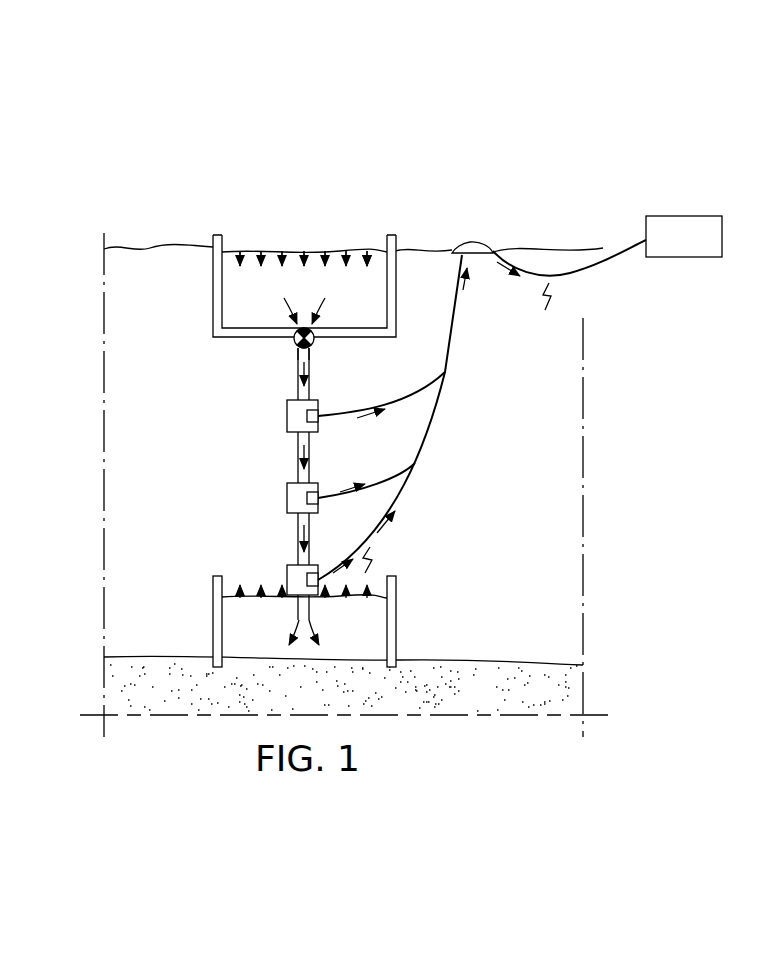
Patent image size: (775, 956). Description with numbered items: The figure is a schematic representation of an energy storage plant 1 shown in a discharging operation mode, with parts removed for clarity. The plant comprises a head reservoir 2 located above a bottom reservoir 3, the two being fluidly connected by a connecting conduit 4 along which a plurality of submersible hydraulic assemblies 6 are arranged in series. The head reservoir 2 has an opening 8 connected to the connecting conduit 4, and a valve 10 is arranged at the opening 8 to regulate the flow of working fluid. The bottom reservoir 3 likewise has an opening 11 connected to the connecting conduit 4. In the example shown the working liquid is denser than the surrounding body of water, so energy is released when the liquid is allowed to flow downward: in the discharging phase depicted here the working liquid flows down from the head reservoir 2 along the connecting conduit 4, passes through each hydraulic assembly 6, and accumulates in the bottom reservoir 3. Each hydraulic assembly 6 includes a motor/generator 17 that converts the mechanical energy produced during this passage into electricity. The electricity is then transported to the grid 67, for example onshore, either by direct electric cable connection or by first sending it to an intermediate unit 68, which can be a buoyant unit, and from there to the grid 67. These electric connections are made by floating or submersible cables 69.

The energy storage plant 1 is at (575, 116).
The head reservoir 2 is at (215, 313).
The bottom reservoir 3 is at (212, 627).
The connecting conduit 4 is at (297, 382).
The submersible hydraulic assembly 6 is at (285, 419).
The opening 8 is at (318, 341).
The valve 10 is at (297, 347).
The opening 11 is at (310, 607).
The motor/generator 17 is at (319, 412).
The grid 67 is at (676, 216).
The intermediate unit 68 is at (465, 243).
The cables 69 is at (555, 276).